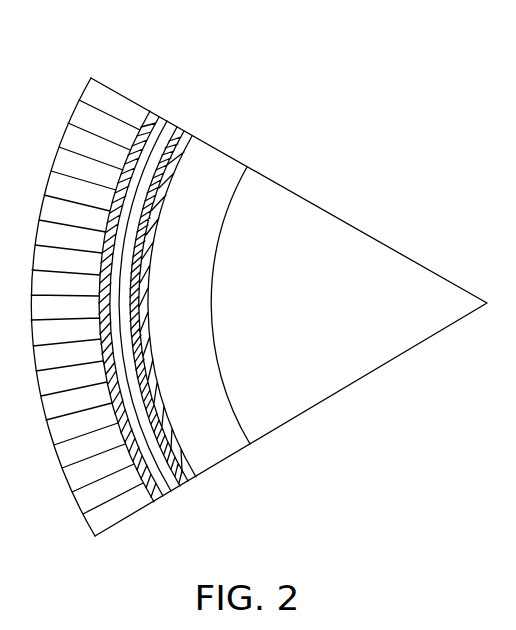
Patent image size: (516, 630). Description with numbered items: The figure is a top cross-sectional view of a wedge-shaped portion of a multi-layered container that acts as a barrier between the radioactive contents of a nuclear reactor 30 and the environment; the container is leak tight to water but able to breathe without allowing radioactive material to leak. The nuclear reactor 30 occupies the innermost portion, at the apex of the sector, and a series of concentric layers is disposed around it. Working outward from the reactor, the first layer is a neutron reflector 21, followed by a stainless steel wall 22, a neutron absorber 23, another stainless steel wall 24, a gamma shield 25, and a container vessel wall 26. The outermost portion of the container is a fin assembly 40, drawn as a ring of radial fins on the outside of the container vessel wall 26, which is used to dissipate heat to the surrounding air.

The fin assembly 40 is at (84, 113).
The container vessel wall 26 is at (152, 107).
The gamma shield 25 is at (160, 110).
The stainless steel wall 24 is at (170, 117).
The neutron absorber 23 is at (182, 125).
The stainless steel wall 22 is at (187, 130).
The neutron reflector 21 is at (215, 173).
The nuclear reactor 30 is at (360, 250).